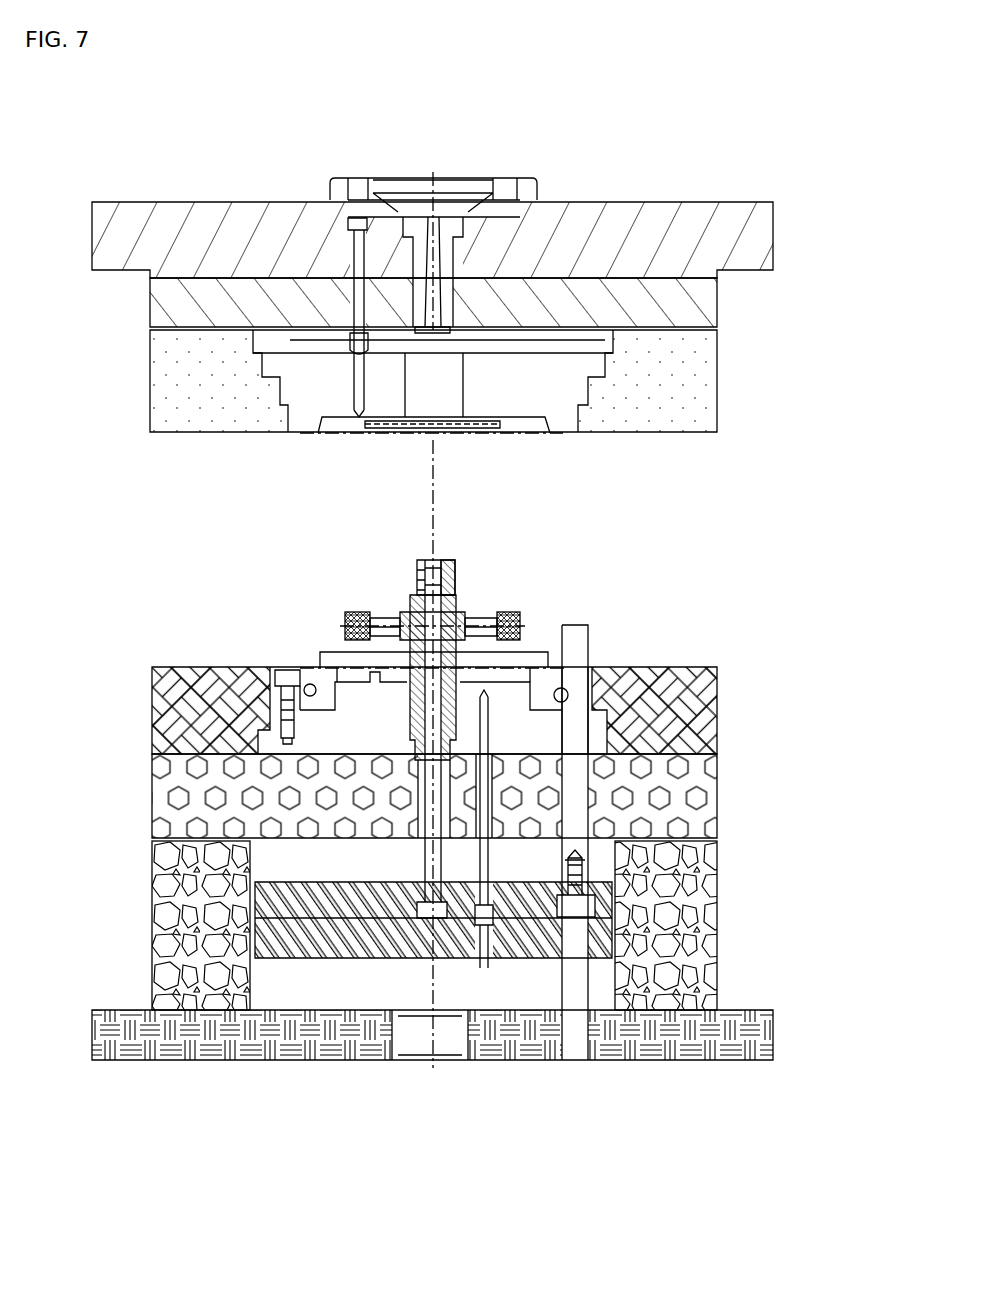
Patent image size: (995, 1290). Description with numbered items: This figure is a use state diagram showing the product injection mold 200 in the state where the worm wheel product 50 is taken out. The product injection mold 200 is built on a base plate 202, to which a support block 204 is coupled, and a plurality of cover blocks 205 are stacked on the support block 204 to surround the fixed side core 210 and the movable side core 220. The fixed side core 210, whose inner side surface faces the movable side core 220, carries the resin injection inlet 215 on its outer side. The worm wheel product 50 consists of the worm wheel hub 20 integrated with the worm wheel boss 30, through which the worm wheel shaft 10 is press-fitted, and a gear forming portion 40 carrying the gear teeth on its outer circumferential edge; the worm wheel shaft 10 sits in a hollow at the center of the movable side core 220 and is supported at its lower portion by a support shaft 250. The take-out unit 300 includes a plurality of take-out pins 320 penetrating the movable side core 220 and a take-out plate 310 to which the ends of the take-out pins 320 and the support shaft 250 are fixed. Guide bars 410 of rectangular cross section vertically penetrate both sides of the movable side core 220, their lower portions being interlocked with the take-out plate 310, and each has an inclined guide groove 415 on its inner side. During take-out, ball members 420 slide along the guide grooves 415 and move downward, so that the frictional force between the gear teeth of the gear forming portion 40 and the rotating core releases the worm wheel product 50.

The worm wheel shaft 10 is at (462, 590).
The worm wheel hub 20 is at (405, 612).
The worm wheel boss 30 is at (378, 614).
The gear forming portion 40 is at (343, 613).
The worm wheel product 50 is at (453, 548).
The product injection mold 200 is at (484, 308).
The base plate 202 is at (255, 1040).
The support block 204 is at (152, 912).
The cover blocks 205 is at (150, 812).
The fixed side core 210 is at (568, 417).
The resin injection inlet 215 is at (505, 190).
The movable side core 220 is at (326, 660).
The support shaft 250 is at (427, 866).
The take-out unit 300 is at (433, 955).
The take-out plate 310 is at (335, 895).
The take-out pins 320 is at (489, 925).
The guide bars 410 is at (580, 792).
The guide groove 415 is at (582, 722).
The ball members 420 is at (567, 688).